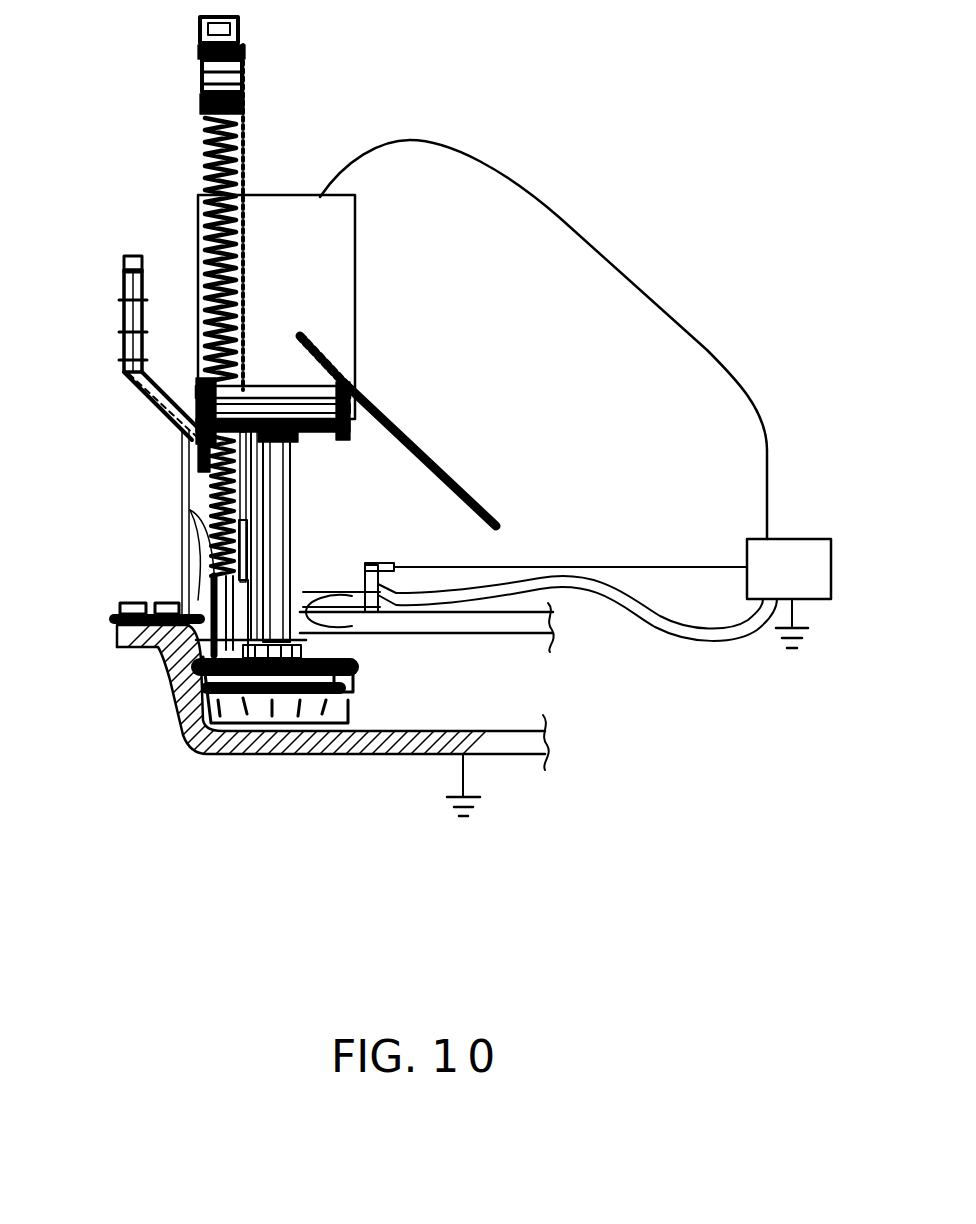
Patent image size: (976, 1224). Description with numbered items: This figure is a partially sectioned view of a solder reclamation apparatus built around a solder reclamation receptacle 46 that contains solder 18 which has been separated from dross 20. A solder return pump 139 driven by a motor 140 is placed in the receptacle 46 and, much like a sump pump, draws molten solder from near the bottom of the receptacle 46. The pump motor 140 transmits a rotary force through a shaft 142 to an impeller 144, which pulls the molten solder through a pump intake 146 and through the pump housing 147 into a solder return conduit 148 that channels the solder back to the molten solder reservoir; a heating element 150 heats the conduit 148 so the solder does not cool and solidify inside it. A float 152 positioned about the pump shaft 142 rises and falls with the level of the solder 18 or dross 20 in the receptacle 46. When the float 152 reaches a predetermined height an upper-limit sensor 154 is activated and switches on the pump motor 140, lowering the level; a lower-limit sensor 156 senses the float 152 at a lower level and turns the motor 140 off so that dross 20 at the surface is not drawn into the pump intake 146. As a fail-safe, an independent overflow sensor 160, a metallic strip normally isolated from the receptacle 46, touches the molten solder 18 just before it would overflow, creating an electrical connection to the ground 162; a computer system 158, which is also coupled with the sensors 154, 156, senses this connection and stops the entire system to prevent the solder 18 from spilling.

The solder return pump 139 is at (455, 120).
The motor 140 is at (330, 266).
The solder return conduit 148 is at (130, 256).
The heating element 150 is at (125, 297).
The upper-limit sensor 154 is at (182, 510).
The float 152 is at (178, 599).
The shaft 142 is at (288, 502).
The lower-limit sensor 156 is at (338, 601).
The overflow sensor 160 is at (375, 563).
The computer system 158 is at (806, 539).
The ground 162 is at (798, 606).
The dross 20 is at (198, 600).
The impeller 144 is at (268, 735).
The pump intake 146 is at (330, 711).
The pump housing 147 is at (352, 662).
The solder 18 is at (370, 748).
The solder reclamation receptacle 46 is at (410, 748).